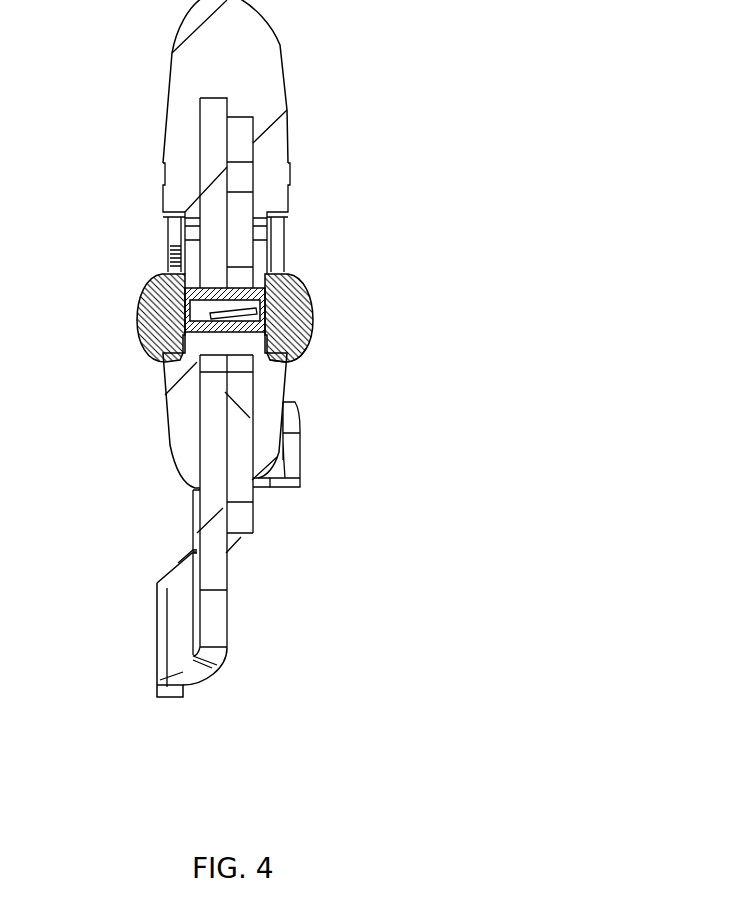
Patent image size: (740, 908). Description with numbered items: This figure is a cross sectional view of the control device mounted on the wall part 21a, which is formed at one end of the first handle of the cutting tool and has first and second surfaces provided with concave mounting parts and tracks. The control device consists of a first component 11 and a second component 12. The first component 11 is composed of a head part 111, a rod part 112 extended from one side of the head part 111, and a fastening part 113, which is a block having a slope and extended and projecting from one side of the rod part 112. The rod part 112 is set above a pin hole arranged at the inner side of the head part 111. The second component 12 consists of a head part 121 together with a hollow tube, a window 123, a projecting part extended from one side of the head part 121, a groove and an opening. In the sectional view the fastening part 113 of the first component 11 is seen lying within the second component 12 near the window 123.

The wall part 21a is at (277, 75).
The first component 11 is at (232, 275).
The head part 111 is at (305, 297).
The rod part 112 is at (293, 353).
The fastening part 113 is at (237, 297).
The head part 121 is at (140, 310).
The window 123 is at (223, 290).
The second component 12 is at (123, 353).